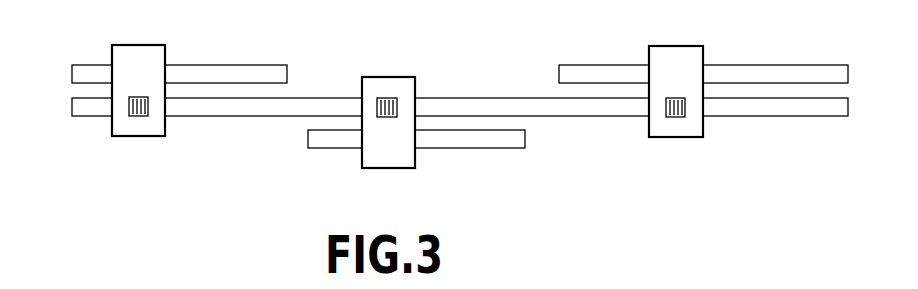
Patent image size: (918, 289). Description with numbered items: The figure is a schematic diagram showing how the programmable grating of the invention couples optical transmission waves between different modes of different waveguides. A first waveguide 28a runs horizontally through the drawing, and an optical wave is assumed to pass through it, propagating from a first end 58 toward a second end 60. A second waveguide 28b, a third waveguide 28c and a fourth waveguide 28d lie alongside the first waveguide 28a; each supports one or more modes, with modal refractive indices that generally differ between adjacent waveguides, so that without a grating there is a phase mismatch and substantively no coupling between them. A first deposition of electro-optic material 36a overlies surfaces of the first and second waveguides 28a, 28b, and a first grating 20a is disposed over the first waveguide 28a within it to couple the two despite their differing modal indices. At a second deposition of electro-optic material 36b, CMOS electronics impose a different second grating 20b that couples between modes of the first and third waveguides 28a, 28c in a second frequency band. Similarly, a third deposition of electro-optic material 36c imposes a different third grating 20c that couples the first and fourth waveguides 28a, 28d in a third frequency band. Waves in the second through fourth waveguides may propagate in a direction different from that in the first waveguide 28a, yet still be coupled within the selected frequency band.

The first grating 20a is at (133, 117).
The second grating 20b is at (388, 98).
The third grating 20c is at (673, 98).
The first waveguide 28a is at (92, 118).
The second waveguide 28b is at (72, 73).
The third waveguide 28c is at (313, 147).
The fourth waveguide 28d is at (559, 71).
The first deposition of electro-optic material 36a is at (163, 56).
The second deposition of electro-optic material 36b is at (390, 165).
The third deposition of electro-optic material 36c is at (682, 135).
The first end 58 is at (72, 108).
The second end 60 is at (849, 107).